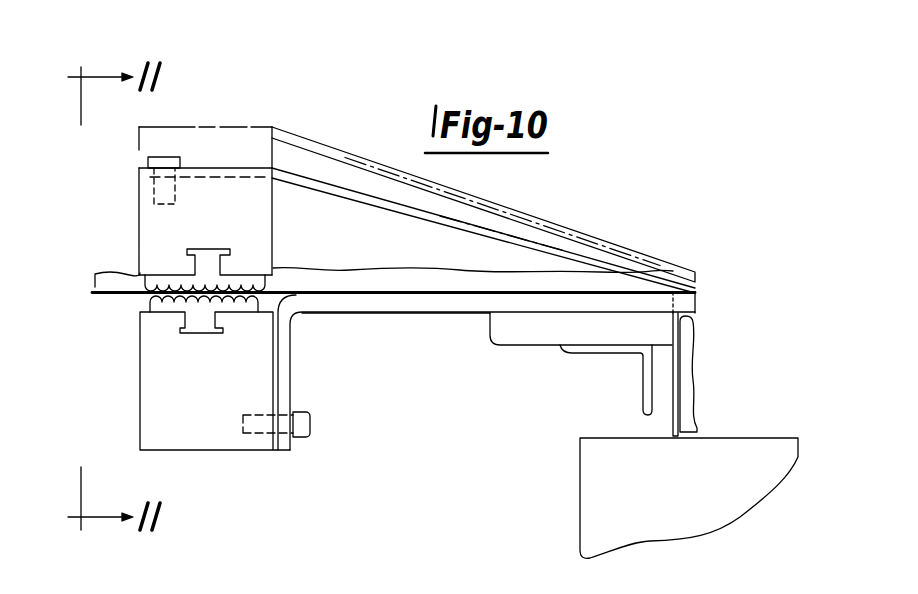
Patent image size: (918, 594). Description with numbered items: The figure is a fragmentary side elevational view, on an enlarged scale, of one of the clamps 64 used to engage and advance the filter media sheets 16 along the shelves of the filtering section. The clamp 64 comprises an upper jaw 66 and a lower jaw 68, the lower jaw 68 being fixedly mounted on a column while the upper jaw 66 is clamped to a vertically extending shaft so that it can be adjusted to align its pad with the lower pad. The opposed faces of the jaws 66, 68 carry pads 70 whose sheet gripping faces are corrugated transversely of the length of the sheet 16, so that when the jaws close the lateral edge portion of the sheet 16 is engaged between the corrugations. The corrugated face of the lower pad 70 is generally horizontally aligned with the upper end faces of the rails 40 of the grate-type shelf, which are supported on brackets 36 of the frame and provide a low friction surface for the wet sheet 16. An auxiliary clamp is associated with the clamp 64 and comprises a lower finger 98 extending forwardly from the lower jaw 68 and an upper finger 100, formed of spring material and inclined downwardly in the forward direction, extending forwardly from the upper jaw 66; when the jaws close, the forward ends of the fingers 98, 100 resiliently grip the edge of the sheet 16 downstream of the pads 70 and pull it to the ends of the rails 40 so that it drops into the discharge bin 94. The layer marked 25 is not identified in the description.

The filter media sheet 16 is at (347, 296).
The cover material 25 is at (374, 277).
The bracket 36 is at (615, 349).
The rail 40 is at (510, 332).
The clamp 64 is at (202, 201).
The upper jaw 66 is at (263, 231).
The lower jaw 68 is at (150, 383).
The pad 70 is at (172, 282).
The discharge bin 94 is at (770, 447).
The finger 98 is at (440, 305).
The upper finger 100 is at (470, 196).